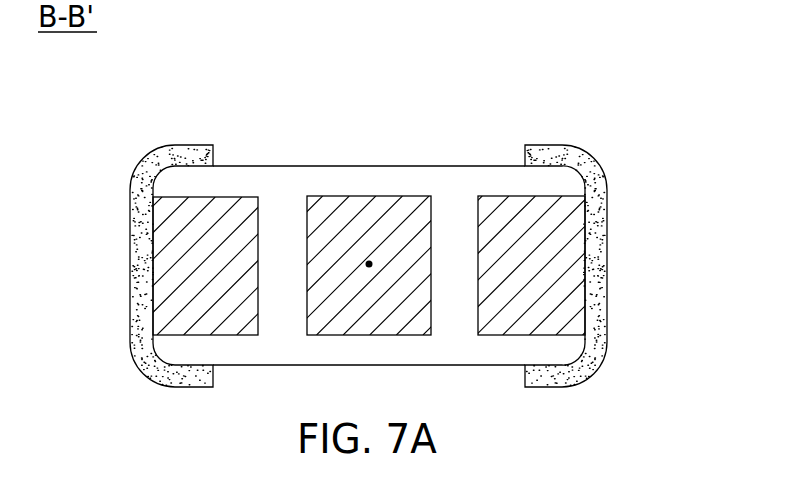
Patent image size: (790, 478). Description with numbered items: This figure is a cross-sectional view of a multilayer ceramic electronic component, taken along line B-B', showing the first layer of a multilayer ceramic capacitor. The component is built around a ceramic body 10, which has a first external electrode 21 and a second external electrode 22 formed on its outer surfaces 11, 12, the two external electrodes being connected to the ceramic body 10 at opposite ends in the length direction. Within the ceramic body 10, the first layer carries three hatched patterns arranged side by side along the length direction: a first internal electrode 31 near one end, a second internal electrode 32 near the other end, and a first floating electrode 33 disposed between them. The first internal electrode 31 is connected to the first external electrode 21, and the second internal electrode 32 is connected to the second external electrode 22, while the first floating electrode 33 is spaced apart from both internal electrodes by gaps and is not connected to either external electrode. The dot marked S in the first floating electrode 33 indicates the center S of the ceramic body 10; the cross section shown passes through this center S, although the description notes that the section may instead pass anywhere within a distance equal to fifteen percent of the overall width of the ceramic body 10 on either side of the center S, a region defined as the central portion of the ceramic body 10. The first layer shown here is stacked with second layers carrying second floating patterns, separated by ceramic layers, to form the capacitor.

The ceramic body 10 is at (287, 176).
The outer surface 11 is at (136, 273).
The outer surface 12 is at (601, 273).
The first external electrode 21 is at (181, 150).
The second external electrode 22 is at (551, 150).
The first internal electrode 31 is at (237, 196).
The second internal electrode 32 is at (498, 196).
The first floating electrode 33 is at (368, 196).
The center of the ceramic body S is at (369, 264).